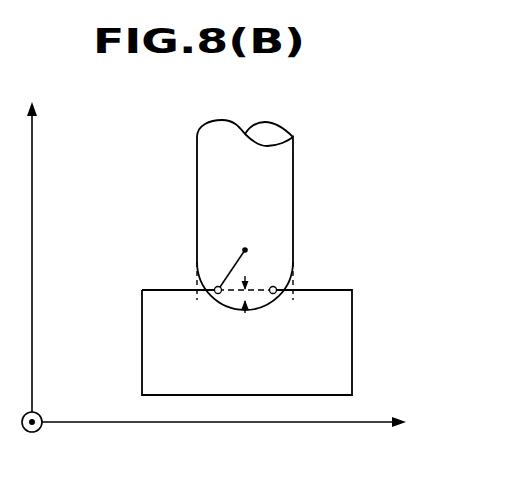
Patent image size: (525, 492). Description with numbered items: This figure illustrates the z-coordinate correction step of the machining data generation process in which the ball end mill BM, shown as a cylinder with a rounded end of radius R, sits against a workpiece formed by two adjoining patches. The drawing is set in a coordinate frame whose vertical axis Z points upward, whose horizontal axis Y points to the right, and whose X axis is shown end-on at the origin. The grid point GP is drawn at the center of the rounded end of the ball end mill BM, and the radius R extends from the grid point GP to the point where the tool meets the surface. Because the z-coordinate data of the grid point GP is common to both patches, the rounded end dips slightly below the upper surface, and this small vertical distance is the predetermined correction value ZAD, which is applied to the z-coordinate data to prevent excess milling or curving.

The ball end mill BM is at (294, 178).
The grid point GP is at (246, 247).
The radius of the ball end mill R is at (233, 270).
The correction value ZAD is at (237, 302).
The x-axis X is at (27, 429).
The y-axis Y is at (224, 434).
The z-axis Z is at (22, 251).